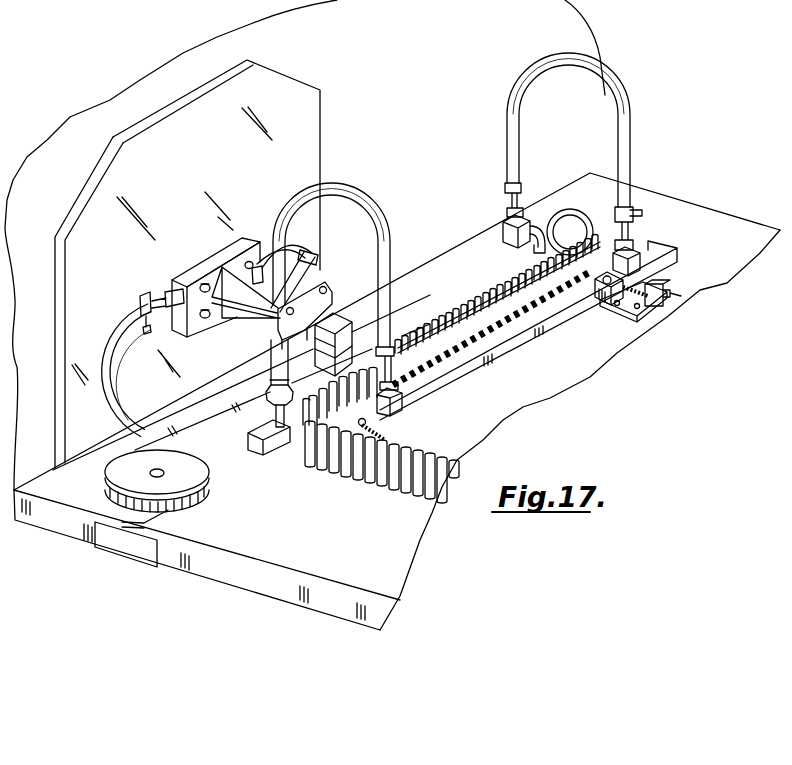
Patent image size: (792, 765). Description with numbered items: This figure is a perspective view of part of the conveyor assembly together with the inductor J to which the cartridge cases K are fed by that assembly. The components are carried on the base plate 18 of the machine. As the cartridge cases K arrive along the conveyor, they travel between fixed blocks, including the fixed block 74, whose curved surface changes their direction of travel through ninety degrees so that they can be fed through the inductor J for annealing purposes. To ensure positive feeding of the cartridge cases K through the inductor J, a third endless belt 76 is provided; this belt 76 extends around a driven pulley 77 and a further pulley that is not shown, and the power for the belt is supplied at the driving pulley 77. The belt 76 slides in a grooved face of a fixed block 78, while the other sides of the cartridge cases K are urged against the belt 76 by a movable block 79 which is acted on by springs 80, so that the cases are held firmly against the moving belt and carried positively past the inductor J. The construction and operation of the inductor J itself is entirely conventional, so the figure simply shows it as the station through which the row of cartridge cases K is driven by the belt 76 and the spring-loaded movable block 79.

The base plate 18 is at (253, 553).
The fixed block 74 is at (287, 460).
The third endless belt 76 is at (207, 417).
The driven pulley 77 is at (117, 476).
The fixed block 78 is at (260, 430).
The movable block 79 is at (497, 350).
The springs 80 is at (400, 416).
The inductor J is at (357, 190).
The cartridge cases K is at (435, 458).